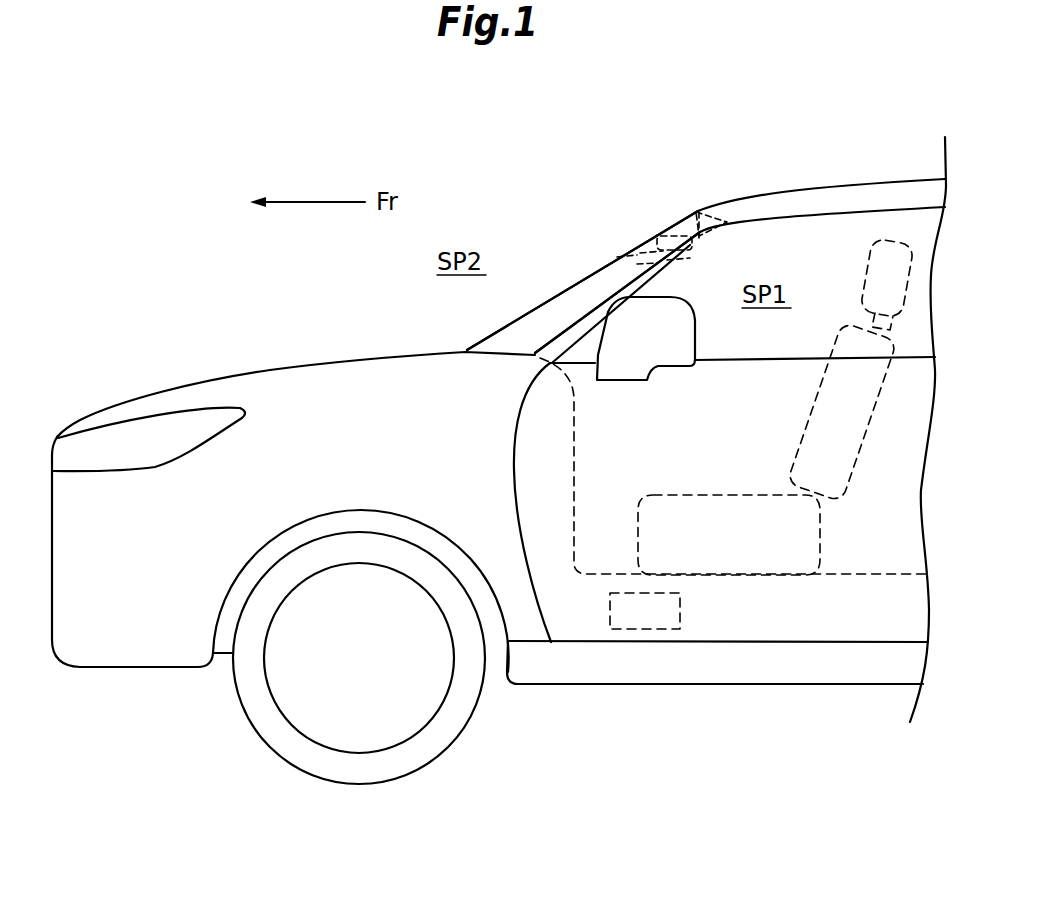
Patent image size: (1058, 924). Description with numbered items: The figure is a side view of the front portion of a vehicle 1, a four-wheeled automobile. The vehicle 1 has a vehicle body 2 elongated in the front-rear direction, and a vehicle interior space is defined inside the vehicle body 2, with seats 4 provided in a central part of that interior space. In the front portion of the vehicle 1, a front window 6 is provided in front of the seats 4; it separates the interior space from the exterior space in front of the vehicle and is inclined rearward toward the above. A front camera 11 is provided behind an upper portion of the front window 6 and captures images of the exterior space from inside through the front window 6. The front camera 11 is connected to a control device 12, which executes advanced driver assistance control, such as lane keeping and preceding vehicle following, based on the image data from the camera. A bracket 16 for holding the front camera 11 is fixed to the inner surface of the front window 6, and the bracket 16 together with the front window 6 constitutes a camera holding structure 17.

The vehicle 1 is at (244, 296).
The vehicle body 2 is at (684, 690).
The seats 4 is at (882, 240).
The front window 6 is at (590, 252).
The front camera 11 is at (685, 232).
The control device 12 is at (680, 619).
The bracket 16 is at (637, 251).
The camera holding structure 17 is at (545, 179).